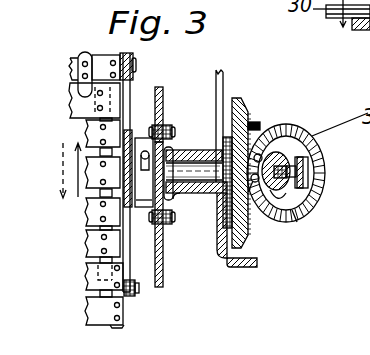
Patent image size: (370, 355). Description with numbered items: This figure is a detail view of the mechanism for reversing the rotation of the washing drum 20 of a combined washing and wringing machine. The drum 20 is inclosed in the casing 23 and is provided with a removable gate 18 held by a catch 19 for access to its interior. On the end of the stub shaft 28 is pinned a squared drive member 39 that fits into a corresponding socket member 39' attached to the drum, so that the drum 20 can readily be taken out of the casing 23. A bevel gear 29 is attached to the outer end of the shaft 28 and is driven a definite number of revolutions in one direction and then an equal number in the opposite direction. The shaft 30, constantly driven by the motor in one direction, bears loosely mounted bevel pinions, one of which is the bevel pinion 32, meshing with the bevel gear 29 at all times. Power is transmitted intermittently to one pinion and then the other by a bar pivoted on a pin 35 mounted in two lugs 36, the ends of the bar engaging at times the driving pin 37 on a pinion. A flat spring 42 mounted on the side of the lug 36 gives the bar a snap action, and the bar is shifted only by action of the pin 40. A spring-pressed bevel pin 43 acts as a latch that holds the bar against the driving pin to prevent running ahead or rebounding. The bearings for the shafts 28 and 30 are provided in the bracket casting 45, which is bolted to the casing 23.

The removable gate 18 is at (88, 233).
The catch 19 is at (76, 67).
The washing drum 20 is at (87, 302).
The casing 23 is at (163, 266).
The stub shaft 28 is at (173, 173).
The bevel gear 29 is at (233, 110).
The shaft 30 is at (297, 213).
The bevel pinion 32 is at (323, 188).
The pin 35 is at (293, 154).
The lugs 36 is at (313, 178).
The pin 37 is at (287, 194).
The squared drive member 39 is at (170, 109).
The socket member 39' is at (71, 157).
The pin 40 is at (256, 121).
The flat spring 42 is at (293, 198).
The bevel pin 43 is at (276, 137).
The bracket casting 45 is at (252, 263).